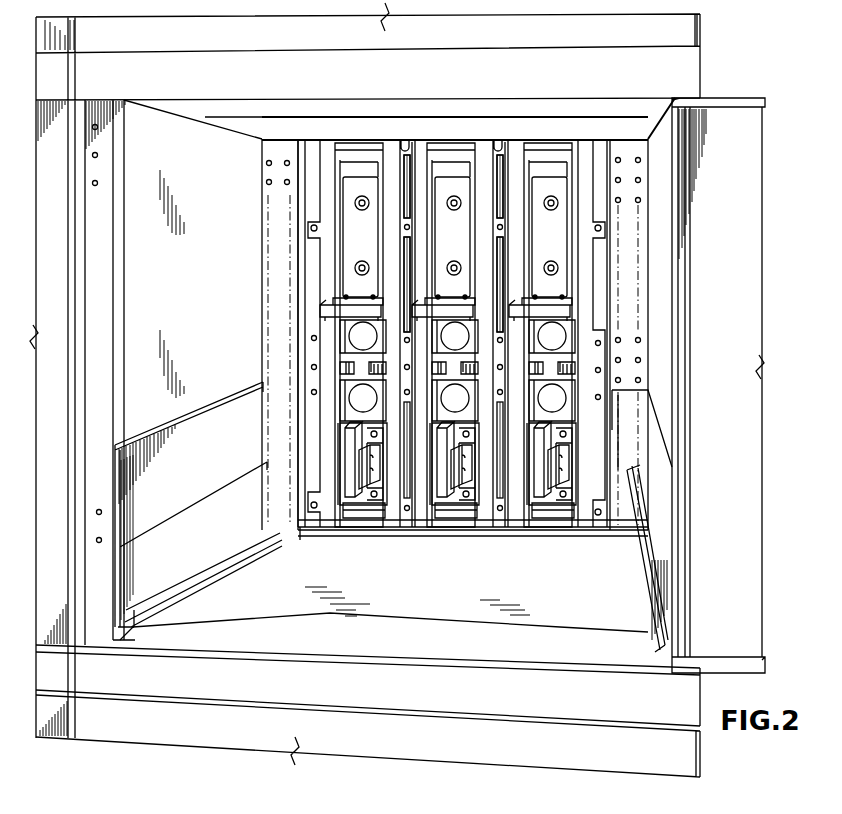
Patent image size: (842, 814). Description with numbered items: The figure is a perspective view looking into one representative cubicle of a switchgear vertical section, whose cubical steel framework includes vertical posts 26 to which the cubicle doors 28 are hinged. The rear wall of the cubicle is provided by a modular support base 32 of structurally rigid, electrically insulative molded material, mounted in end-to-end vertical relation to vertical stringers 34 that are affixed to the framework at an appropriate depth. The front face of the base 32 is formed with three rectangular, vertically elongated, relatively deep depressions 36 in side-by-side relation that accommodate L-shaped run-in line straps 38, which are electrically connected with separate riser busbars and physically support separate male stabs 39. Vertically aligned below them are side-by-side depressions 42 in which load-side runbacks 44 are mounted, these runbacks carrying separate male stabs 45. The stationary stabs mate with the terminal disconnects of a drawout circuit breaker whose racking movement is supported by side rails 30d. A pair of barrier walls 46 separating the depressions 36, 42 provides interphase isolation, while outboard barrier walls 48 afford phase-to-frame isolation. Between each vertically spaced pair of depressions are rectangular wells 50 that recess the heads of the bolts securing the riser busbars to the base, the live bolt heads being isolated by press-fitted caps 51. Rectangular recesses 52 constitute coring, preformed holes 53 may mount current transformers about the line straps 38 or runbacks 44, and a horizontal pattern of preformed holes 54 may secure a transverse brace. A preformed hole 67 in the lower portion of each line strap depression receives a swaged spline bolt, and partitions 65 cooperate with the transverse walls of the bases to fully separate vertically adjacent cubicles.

The vertical posts 26 is at (128, 302).
The doors 28 is at (750, 118).
The side rails 30d is at (195, 560).
The modular support base 32 is at (325, 527).
The vertical stringers 34 is at (270, 236).
The depressions 36 is at (338, 190).
The line straps 38 is at (352, 239).
The male stabs 39 is at (320, 302).
The depressions 42 is at (385, 508).
The load-side runbacks 44 is at (364, 500).
The male stabs 45 is at (348, 470).
The barrier walls 46 is at (393, 168).
The outboard barrier walls 48 is at (318, 199).
The rectangular wells 50 is at (340, 323).
The caps 51 is at (357, 393).
The rectangular recesses 52 is at (407, 182).
The preformed holes 53 is at (598, 232).
The preformed holes 54 is at (314, 367).
The partitions 65 is at (391, 596).
The preformed hole 67 is at (247, 123).